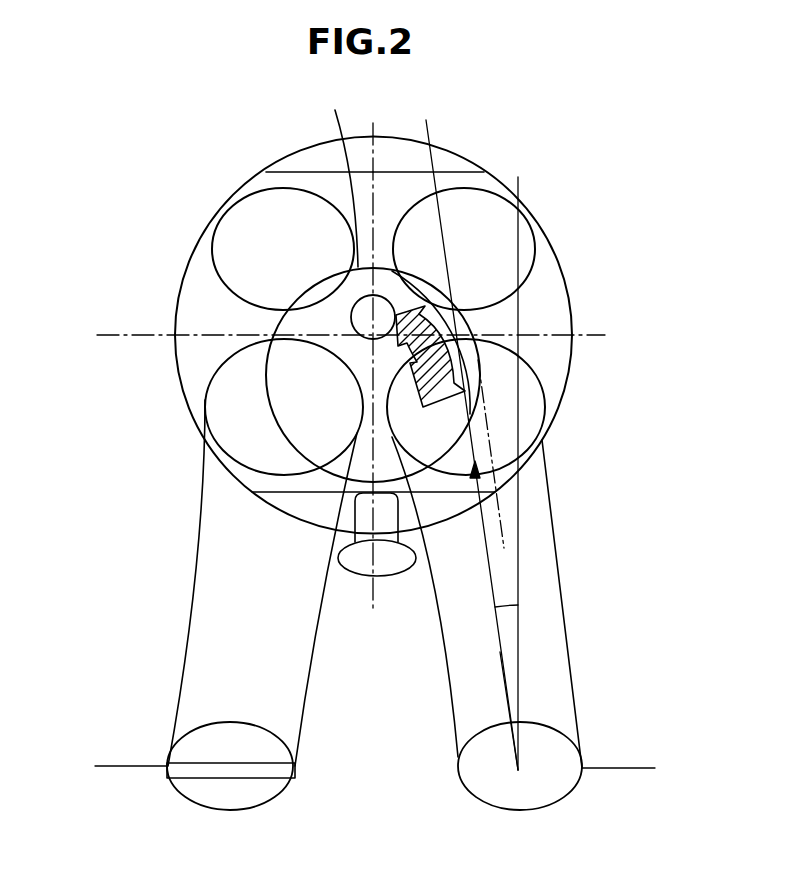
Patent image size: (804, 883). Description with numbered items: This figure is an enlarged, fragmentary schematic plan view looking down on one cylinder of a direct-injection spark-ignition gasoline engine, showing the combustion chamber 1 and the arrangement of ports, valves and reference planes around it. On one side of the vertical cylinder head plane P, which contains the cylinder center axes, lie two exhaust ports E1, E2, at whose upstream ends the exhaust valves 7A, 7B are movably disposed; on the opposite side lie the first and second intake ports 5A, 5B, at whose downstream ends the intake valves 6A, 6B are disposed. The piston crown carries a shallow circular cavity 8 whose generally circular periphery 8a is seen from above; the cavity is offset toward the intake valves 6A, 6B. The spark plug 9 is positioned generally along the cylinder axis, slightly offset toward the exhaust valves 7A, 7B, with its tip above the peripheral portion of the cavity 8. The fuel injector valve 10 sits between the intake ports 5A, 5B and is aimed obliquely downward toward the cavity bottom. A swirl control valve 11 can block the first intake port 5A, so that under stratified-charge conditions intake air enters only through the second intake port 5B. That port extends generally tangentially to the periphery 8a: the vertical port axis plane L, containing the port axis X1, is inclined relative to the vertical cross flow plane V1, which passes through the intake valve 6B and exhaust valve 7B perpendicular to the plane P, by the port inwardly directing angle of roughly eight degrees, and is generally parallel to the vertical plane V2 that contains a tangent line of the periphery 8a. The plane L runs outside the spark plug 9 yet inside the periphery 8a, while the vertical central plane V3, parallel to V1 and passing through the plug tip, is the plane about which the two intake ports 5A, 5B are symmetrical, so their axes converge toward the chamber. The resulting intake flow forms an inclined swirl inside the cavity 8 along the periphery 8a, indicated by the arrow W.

The combustion chamber 1 is at (548, 282).
The first intake port 5A is at (185, 680).
The second intake port 5B is at (563, 682).
The first intake valve 6A is at (227, 407).
The second intake valve 6B is at (533, 407).
The first exhaust valve 7A is at (232, 238).
The second exhaust valve 7B is at (487, 207).
The circular cavity 8 is at (283, 328).
The periphery of the cavity 8a is at (343, 135).
The spark plug 9 is at (395, 297).
The fuel injector valve 10 is at (350, 565).
The swirl control valve 11 is at (265, 803).
The first exhaust port E1 is at (257, 188).
The second exhaust port E2 is at (463, 187).
The vertical port axis plane L is at (425, 128).
The vertical cylinder head plane P is at (117, 336).
The arrow indicating inclined swirl W is at (472, 375).
The vertical cross flow plane V1 is at (518, 525).
The vertical plane containing tangent line V2 is at (492, 457).
The vertical central plane V3 is at (377, 597).
The axis of the second intake port X1 is at (500, 652).